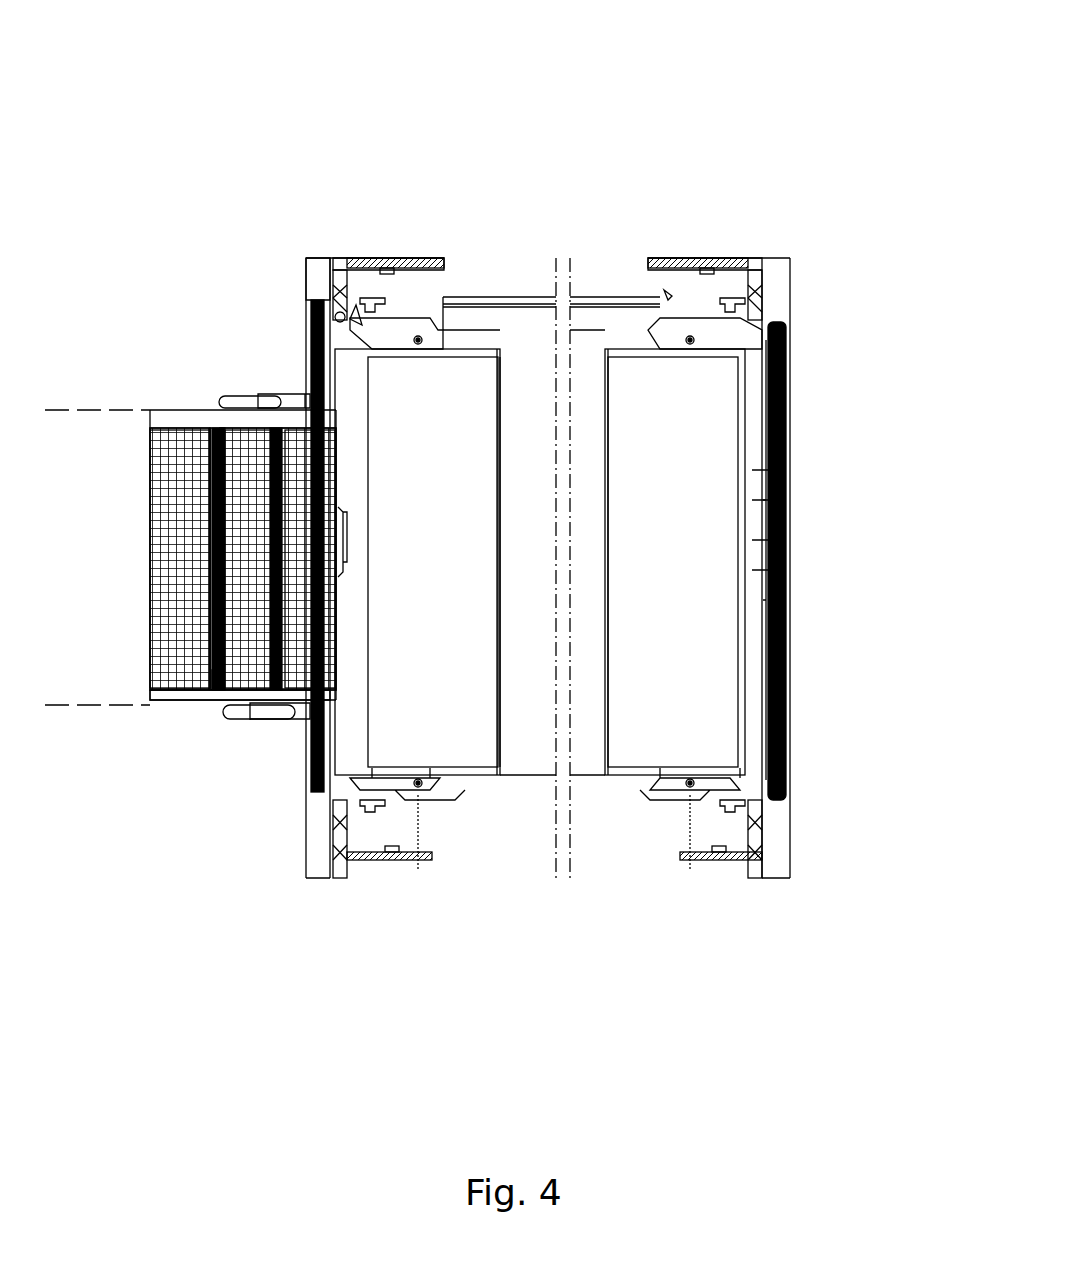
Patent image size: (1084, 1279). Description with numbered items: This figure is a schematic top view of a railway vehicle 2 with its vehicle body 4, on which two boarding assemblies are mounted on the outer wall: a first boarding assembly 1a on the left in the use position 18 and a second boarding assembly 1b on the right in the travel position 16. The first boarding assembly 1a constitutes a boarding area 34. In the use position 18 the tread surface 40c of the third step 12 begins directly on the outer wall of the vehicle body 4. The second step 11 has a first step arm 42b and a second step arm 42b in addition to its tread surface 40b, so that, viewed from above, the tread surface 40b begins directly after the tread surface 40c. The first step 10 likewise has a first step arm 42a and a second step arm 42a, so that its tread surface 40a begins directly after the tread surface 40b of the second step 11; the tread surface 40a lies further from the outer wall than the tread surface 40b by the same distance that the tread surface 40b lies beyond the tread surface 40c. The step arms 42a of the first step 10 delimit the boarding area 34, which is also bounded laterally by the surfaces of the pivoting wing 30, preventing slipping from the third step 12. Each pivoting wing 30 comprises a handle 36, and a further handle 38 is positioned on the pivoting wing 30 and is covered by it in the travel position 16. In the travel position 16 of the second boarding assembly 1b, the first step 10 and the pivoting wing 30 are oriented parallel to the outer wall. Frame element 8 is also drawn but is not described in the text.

The railway vehicle 2 is at (522, 280).
The vehicle body 4 is at (606, 285).
The frame profile 8 is at (320, 262).
The third step 12 is at (303, 396).
The pivoting wing 30 is at (262, 398).
The handle 36 is at (786, 330).
The handle 38 is at (300, 722).
The boarding area 34 is at (125, 538).
The step arm 42a is at (172, 420).
The step arm 42b is at (225, 420).
The tread surface 40a is at (185, 548).
The tread surface 40b is at (255, 560).
The tread surface 40c is at (228, 628).
The first step 10 is at (152, 692).
The second step 11 is at (195, 672).
The use position 18 is at (138, 838).
The first boarding assembly 1a is at (172, 840).
The travel position 16 is at (862, 735).
The second boarding assembly 1b is at (823, 778).